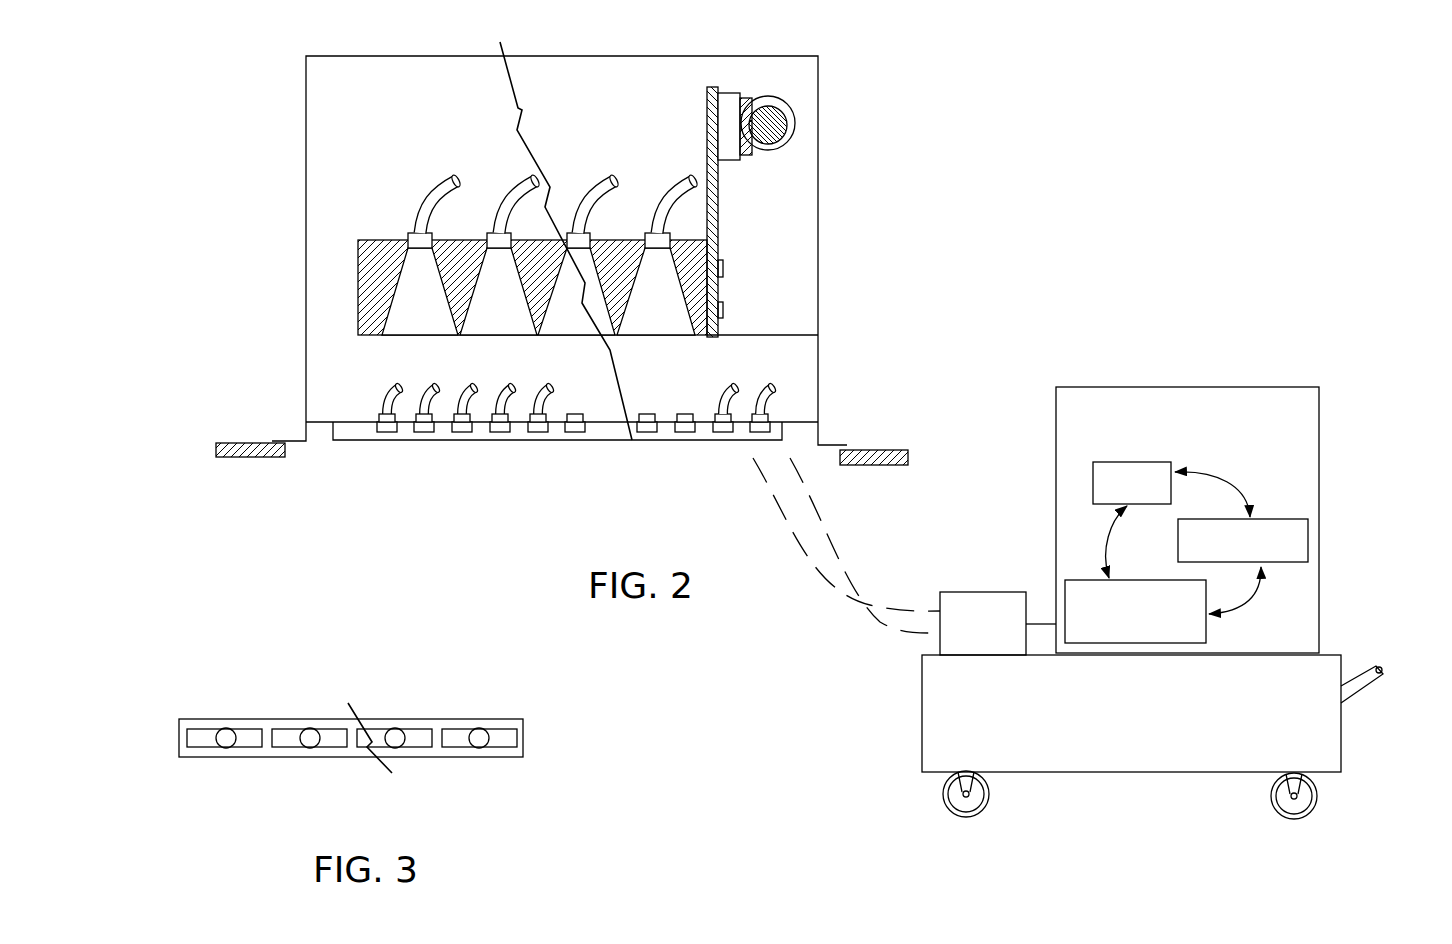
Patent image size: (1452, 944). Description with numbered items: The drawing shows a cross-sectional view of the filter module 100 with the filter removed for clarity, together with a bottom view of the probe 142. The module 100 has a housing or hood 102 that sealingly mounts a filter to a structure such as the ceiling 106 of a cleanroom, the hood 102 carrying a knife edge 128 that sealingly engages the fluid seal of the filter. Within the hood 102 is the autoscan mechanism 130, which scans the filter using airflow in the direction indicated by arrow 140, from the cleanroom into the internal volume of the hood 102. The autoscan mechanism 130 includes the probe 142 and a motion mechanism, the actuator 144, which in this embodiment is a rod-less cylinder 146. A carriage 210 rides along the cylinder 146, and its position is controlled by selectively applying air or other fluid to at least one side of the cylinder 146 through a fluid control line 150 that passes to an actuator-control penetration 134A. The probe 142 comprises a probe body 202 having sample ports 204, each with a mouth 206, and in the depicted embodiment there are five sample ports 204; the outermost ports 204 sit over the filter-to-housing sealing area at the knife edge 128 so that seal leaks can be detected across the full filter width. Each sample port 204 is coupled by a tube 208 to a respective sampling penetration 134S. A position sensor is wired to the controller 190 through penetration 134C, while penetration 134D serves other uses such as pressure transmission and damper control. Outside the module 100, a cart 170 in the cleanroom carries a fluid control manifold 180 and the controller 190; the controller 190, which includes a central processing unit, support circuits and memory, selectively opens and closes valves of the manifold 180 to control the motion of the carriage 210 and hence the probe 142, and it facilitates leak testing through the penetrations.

In FIG. 2, the filter module 100 is at (186, 119).
In FIG. 2, the hood 102 is at (306, 134).
In FIG. 2, the ceiling 106 is at (253, 442).
In FIG. 2, the knife edge 128 is at (336, 424).
In FIG. 2, the autoscan mechanism 130 is at (668, 105).
In FIG. 2, the sampling penetration 134S is at (548, 442).
In FIG. 2, the actuator control penetration 134A is at (645, 433).
In FIG. 2, the other-use penetration 134D is at (682, 433).
In FIG. 2, the positional information penetration 134C is at (809, 429).
In FIG. 2, the arrow 140 is at (738, 392).
In FIG. 2, the fluid control line 150 is at (775, 406).
In FIG. 2, the probe 142 is at (513, 278).
In FIG. 3, the probe 142 is at (351, 719).
In FIG. 2, the actuator 144 is at (837, 201).
In FIG. 2, the rod-less cylinder 146 is at (854, 163).
In FIG. 2, the carriage 210 is at (770, 153).
In FIG. 2, the probe body 202 is at (357, 301).
In FIG. 3, the probe body 202 is at (237, 720).
In FIG. 2, the sample port 204 is at (577, 318).
In FIG. 3, the sample port 204 is at (340, 728).
In FIG. 3, the mouth 206 is at (417, 730).
In FIG. 2, the tube 208 is at (421, 210).
In FIG. 2, the cart 170 is at (1378, 624).
In FIG. 2, the fluid control manifold 180 is at (998, 623).
In FIG. 2, the controller 190 is at (1166, 446).